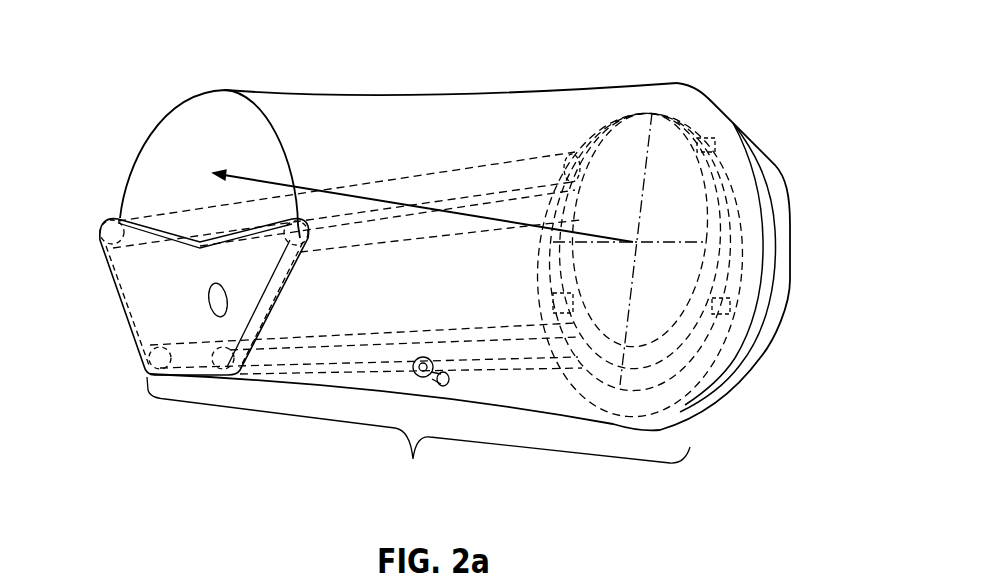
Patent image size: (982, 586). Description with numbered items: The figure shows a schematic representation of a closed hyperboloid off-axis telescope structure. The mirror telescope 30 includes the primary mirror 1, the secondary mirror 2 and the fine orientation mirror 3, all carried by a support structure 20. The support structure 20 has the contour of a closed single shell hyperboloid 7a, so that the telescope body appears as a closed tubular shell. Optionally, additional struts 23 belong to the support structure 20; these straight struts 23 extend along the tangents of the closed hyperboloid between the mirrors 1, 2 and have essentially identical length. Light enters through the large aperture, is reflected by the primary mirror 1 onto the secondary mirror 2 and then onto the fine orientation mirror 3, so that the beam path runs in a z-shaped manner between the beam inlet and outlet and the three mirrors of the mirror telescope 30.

The primary mirror 1 is at (692, 223).
The secondary mirror 2 is at (215, 298).
The fine orientation mirror 3 is at (410, 370).
The closed single shell hyperboloid 7a is at (418, 431).
The support structure 20 is at (383, 173).
The struts 23 is at (503, 210).
The mirror telescope 30 is at (131, 127).